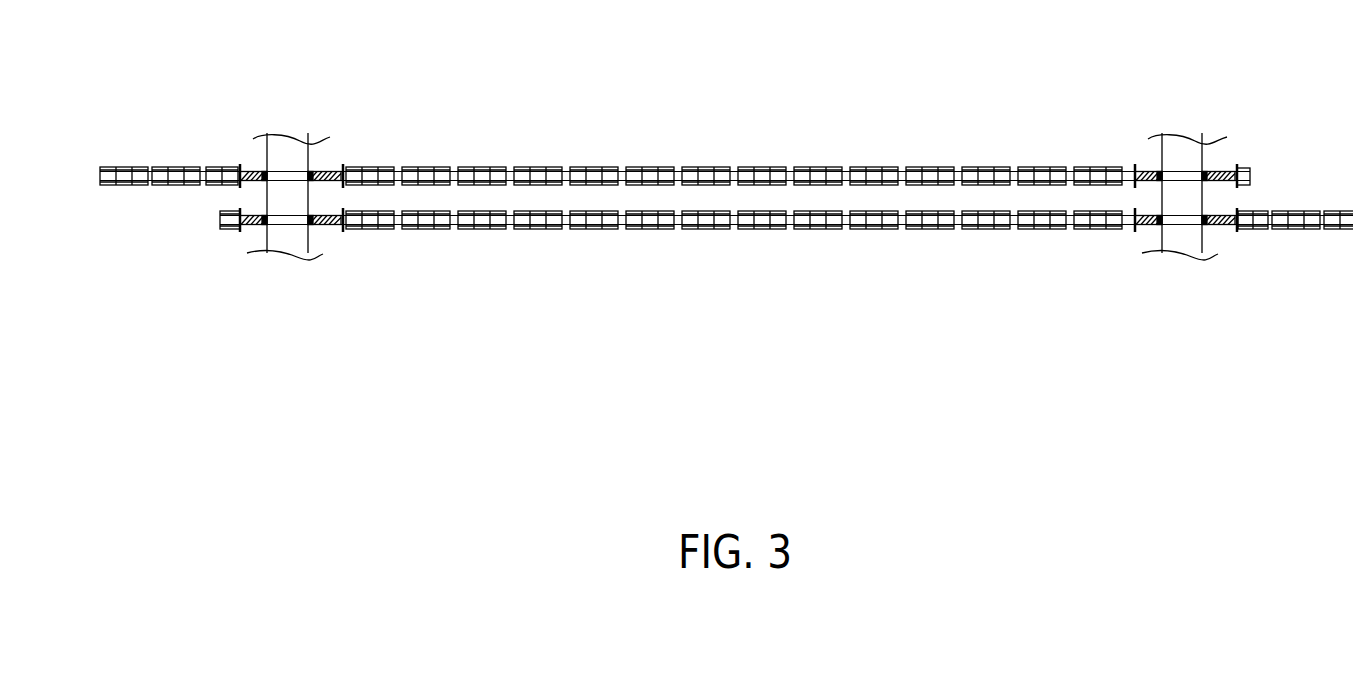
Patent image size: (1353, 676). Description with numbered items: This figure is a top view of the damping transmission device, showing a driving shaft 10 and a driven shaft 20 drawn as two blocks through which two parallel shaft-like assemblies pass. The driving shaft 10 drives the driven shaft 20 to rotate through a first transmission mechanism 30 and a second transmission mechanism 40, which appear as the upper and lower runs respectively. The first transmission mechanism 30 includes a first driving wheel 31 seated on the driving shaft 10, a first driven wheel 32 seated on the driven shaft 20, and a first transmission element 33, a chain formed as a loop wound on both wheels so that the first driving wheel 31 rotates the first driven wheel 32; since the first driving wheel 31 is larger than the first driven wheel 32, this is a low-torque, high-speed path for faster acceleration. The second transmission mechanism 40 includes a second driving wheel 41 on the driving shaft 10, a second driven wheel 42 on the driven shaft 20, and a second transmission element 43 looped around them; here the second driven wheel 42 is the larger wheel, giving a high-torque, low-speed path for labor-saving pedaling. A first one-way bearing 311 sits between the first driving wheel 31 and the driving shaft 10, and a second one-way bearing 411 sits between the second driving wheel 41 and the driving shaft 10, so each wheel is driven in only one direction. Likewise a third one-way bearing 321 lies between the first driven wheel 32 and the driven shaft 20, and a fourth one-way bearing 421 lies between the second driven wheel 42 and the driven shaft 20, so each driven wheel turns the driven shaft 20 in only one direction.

The driving shaft 10 is at (283, 145).
The driven shaft 20 is at (1173, 158).
The first transmission mechanism 30 is at (692, 103).
The first driving wheel 31 is at (330, 171).
The first one-way bearing 311 is at (263, 171).
The first driven wheel 32 is at (1222, 171).
The third one-way bearing 321 is at (1157, 171).
The first transmission element 33 is at (732, 170).
The second transmission mechanism 40 is at (775, 296).
The second driving wheel 41 is at (252, 228).
The second one-way bearing 411 is at (325, 228).
The second driven wheel 42 is at (1145, 228).
The fourth one-way bearing 421 is at (1218, 228).
The second transmission element 43 is at (697, 230).